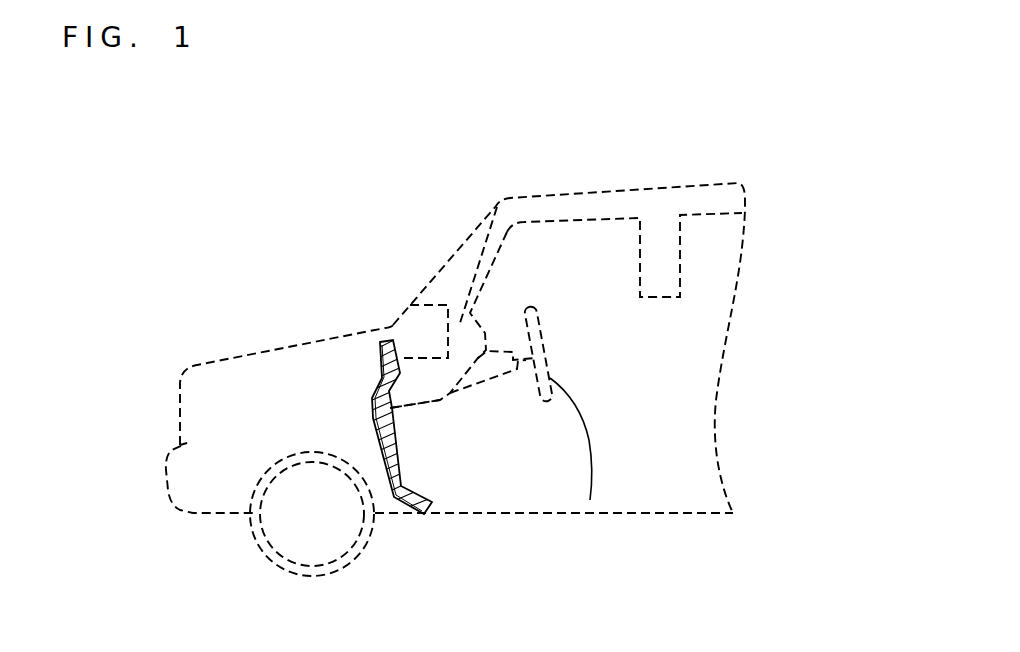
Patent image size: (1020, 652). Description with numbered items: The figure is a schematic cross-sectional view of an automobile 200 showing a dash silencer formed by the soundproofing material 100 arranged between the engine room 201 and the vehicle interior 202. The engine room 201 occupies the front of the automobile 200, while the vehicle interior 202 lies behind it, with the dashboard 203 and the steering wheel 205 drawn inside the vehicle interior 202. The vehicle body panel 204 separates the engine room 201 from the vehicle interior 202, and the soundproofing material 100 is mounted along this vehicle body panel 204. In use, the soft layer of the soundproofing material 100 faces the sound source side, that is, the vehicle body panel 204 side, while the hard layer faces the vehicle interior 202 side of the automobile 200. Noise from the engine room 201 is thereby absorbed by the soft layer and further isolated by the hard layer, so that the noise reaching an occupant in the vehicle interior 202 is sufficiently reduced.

The soundproofing material 100 is at (407, 453).
The automobile 200 is at (568, 161).
The engine room 201 is at (293, 387).
The vehicle interior 202 is at (617, 362).
The dashboard 203 is at (465, 333).
The vehicle body panel 204 is at (382, 450).
The steering wheel 205 is at (590, 500).